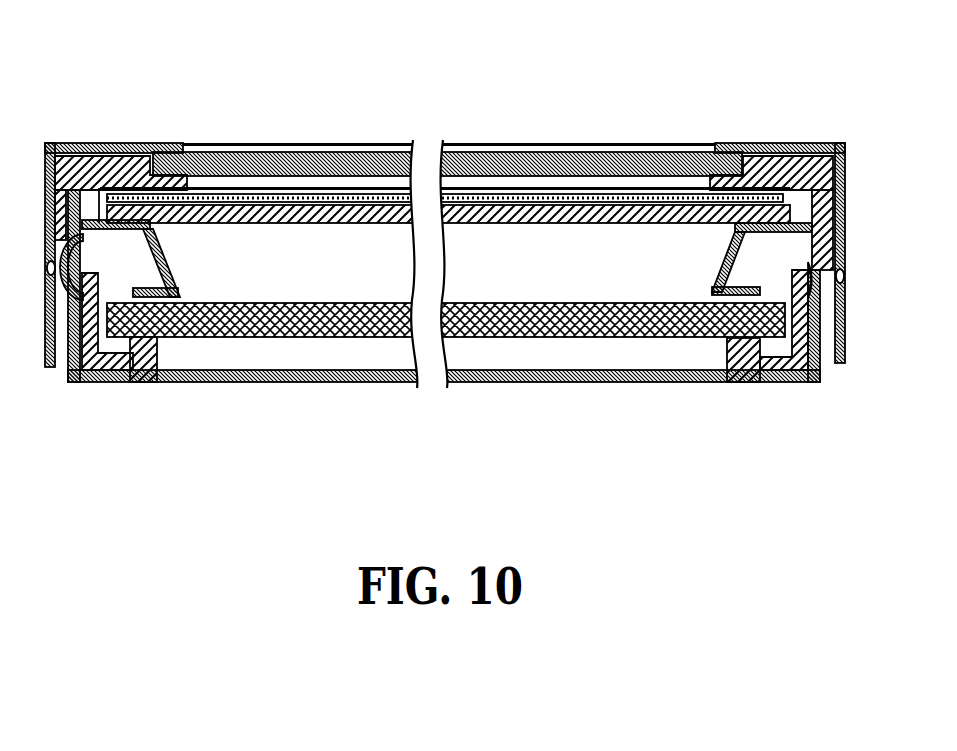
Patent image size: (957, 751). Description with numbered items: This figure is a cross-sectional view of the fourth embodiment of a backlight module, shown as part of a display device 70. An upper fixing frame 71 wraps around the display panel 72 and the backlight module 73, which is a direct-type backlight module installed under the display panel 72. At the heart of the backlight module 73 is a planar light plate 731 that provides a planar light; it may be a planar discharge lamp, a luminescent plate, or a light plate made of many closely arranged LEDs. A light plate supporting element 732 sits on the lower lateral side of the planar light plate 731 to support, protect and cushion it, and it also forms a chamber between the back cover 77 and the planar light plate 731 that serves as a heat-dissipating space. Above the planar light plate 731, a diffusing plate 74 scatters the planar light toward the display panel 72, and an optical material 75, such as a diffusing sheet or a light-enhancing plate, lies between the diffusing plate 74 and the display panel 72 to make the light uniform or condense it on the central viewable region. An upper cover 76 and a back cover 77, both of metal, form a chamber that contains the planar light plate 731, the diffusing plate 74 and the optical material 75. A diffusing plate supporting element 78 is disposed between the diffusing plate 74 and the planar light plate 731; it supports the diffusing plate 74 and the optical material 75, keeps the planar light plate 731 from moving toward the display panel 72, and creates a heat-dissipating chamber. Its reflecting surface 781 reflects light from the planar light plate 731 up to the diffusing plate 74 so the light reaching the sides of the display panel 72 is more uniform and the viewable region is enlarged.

The display device 70 is at (729, 58).
The upper fixing frame 71 is at (780, 143).
The display panel 72 is at (640, 152).
The backlight module 73 is at (855, 190).
The diffusing plate 74 is at (522, 190).
The optical material 75 is at (585, 205).
The upper cover 76 is at (83, 144).
The back cover 77 is at (320, 383).
The diffusing plate supporting element 78 is at (113, 145).
The planar light plate 731 is at (265, 338).
The light plate supporting element 732 is at (148, 357).
The reflecting surface 781 is at (178, 228).